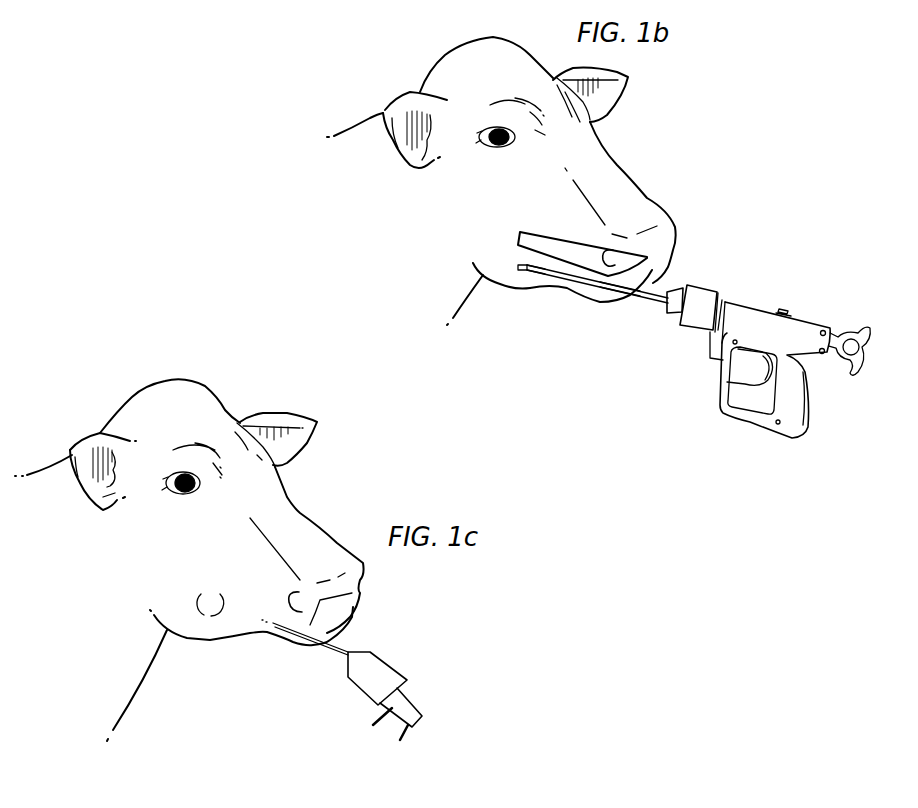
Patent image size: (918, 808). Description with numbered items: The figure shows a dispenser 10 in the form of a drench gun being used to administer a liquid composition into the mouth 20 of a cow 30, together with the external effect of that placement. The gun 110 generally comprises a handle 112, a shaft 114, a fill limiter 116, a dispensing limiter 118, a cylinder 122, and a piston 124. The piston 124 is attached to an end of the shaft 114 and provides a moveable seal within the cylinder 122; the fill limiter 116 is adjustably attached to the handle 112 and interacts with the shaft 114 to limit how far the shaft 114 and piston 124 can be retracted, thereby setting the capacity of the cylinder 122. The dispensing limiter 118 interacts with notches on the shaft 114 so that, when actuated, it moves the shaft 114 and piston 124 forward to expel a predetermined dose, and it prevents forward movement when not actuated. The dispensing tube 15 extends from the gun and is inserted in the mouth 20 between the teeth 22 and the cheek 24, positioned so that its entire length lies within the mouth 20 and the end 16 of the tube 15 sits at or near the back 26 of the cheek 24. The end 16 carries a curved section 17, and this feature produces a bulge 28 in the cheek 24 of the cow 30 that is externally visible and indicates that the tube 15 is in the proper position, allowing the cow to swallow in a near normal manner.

In FIG. 1C, the dispenser 10 is at (408, 695).
In FIG. 1B, the dispensing tube 15 is at (614, 283).
In FIG. 1B, the end of tube 16 is at (517, 271).
In FIG. 1B, the curved section 17 is at (523, 272).
In FIG. 1B, the mouth 20 is at (677, 283).
In FIG. 1B, the teeth 22 is at (553, 247).
In FIG. 1B, the cheek 24 is at (545, 283).
In FIG. 1C, the cheek 24 is at (227, 623).
In FIG. 1B, the back of cheek 26 is at (493, 253).
In FIG. 1C, the bulge 28 is at (197, 597).
In FIG. 1B, the cow 30 is at (615, 165).
In FIG. 1C, the cow 30 is at (317, 527).
In FIG. 1B, the gun 110 is at (792, 437).
In FIG. 1B, the handle 112 is at (740, 423).
In FIG. 1B, the shaft 114 is at (838, 335).
In FIG. 1B, the fill limiter 116 is at (787, 308).
In FIG. 1B, the dispensing limiter 118 is at (765, 377).
In FIG. 1B, the cylinder 122 is at (707, 290).
In FIG. 1B, the piston 124 is at (725, 303).